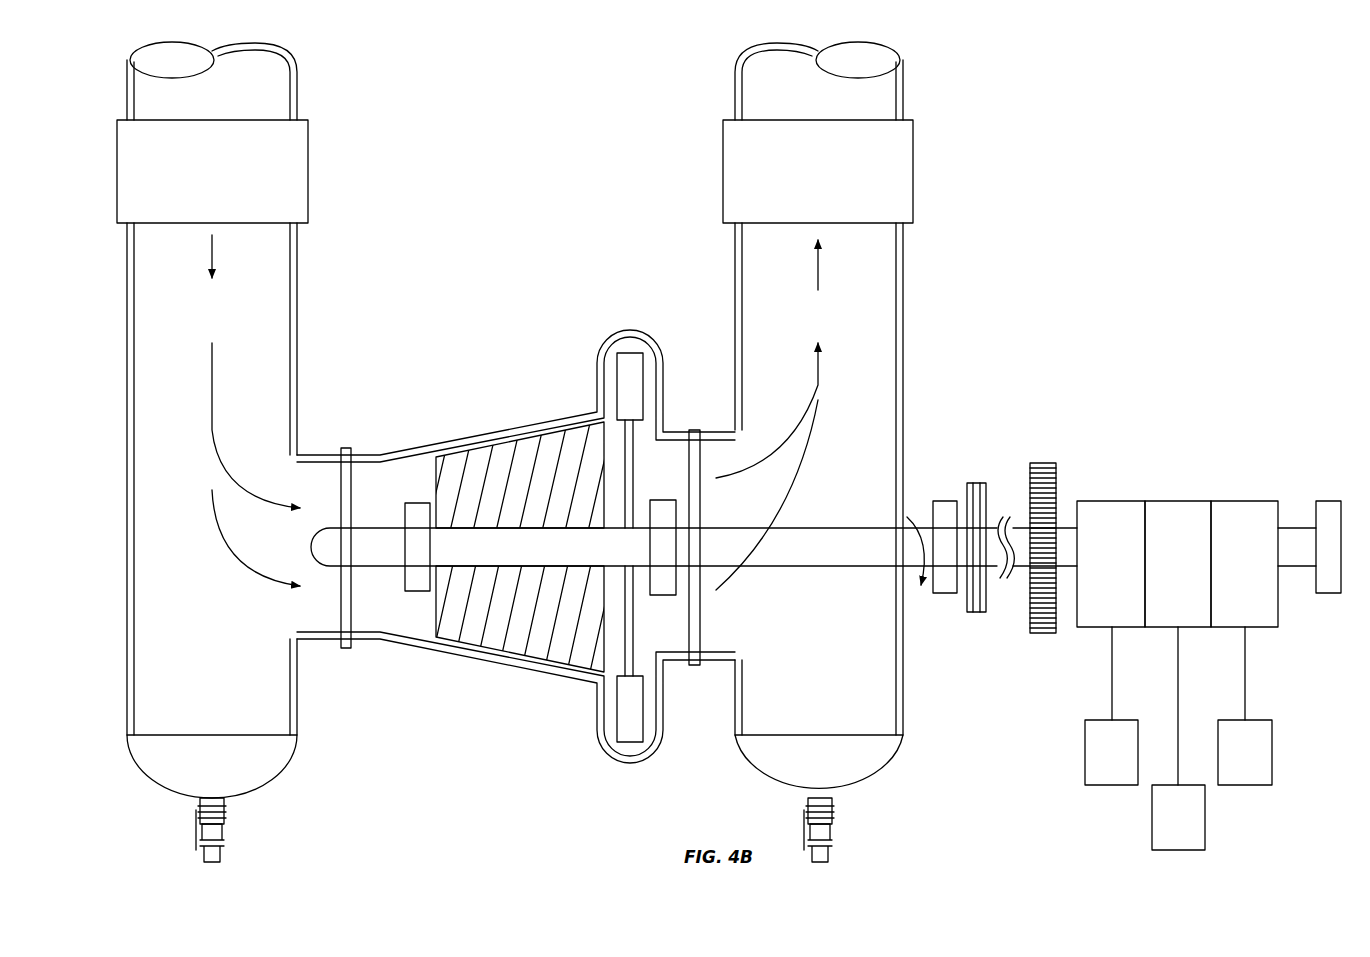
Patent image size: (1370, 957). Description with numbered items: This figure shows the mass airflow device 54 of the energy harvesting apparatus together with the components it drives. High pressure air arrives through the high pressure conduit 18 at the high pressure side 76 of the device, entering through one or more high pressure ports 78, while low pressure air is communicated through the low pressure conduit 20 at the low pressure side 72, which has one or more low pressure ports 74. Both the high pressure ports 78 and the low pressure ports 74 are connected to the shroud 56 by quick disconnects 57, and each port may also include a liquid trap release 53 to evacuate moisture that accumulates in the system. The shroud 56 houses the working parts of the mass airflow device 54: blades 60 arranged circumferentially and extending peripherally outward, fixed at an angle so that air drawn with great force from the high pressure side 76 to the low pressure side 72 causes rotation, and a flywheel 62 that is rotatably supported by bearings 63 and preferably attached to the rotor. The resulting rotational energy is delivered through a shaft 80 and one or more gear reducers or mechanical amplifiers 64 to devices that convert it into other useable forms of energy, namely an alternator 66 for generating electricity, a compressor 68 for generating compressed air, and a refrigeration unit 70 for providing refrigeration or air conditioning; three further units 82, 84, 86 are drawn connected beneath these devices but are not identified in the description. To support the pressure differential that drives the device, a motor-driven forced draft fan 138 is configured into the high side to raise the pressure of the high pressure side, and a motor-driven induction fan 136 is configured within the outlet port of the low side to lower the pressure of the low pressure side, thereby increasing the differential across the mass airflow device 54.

The high pressure conduit 18 is at (297, 284).
The low pressure conduit 20 is at (903, 284).
The liquid trap release 53 is at (224, 830).
The mass airflow device 54 is at (466, 384).
The shroud 56 is at (410, 452).
The quick disconnect 57 is at (341, 483).
The blades 60 is at (530, 432).
The flywheel 62 is at (633, 470).
The bearing 63 is at (417, 504).
The gear reducer or mechanical amplifier 64 is at (1045, 463).
The alternator 66 is at (1110, 500).
The compressor 68 is at (1178, 500).
The refrigeration unit 70 is at (1245, 500).
The low pressure side 72 is at (903, 332).
The low pressure port 74 is at (720, 607).
The high pressure side 76 is at (297, 332).
The high pressure port 78 is at (311, 610).
The shaft 80 is at (838, 527).
The controller box 82 is at (1085, 750).
The controller box 84 is at (1152, 815).
The controller box 86 is at (1272, 742).
The induction fan 136 is at (913, 168).
The forced draft fan 138 is at (308, 168).